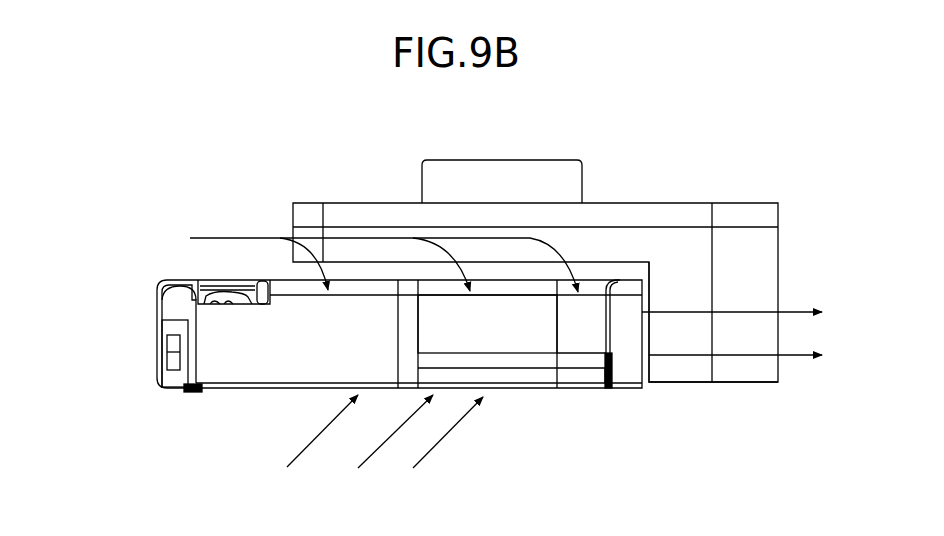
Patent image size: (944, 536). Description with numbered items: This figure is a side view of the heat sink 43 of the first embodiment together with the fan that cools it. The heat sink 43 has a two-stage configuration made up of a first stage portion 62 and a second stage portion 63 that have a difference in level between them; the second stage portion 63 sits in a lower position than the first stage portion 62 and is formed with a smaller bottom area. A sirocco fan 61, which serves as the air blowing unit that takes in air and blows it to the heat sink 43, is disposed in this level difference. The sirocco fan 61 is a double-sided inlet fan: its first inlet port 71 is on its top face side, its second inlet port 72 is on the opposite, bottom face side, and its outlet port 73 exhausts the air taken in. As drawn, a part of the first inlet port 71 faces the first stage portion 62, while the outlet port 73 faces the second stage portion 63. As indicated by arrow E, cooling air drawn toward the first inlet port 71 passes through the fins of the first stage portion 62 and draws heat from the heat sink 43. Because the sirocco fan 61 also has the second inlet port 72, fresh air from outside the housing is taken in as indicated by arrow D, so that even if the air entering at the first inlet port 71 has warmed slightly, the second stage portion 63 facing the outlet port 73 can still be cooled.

The heat sink 43 is at (753, 167).
The sirocco fan 61 is at (153, 340).
The first stage portion 62 is at (383, 255).
The second stage portion 63 is at (737, 383).
The first inlet port 71 is at (508, 279).
The second inlet port 72 is at (495, 389).
The outlet port 73 is at (641, 383).
The arrow E is at (228, 238).
The arrow D is at (295, 460).